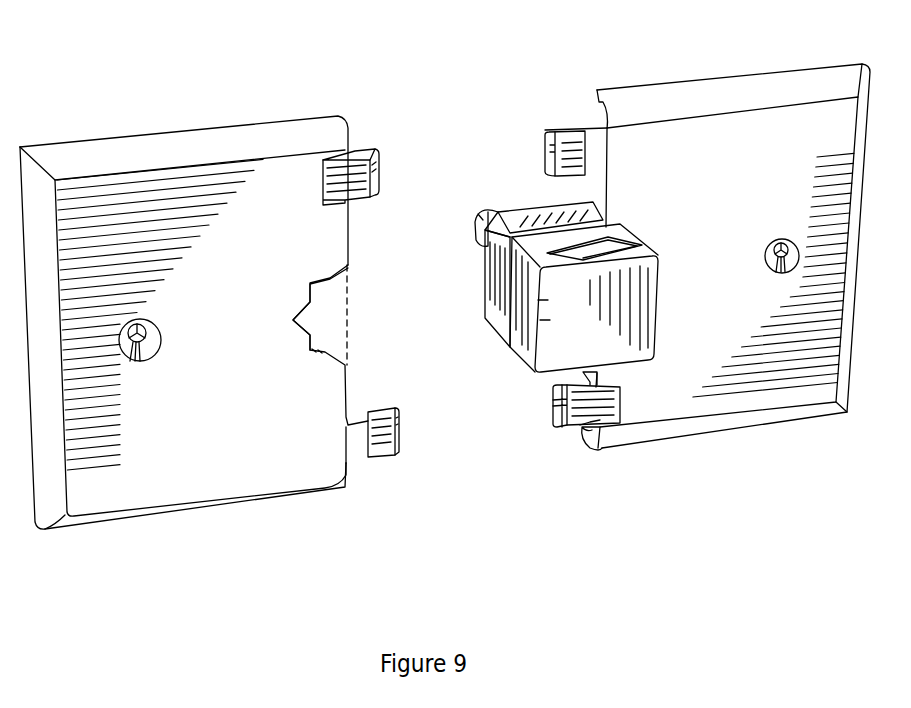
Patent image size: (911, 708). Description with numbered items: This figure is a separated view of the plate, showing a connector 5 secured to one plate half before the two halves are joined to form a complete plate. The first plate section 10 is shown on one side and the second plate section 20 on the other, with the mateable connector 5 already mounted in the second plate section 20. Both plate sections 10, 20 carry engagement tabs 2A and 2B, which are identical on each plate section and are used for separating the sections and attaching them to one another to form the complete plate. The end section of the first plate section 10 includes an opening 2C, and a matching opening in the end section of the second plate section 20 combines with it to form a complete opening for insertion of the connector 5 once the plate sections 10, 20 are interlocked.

The connector 5 is at (520, 225).
The first plate section 10 is at (318, 498).
The second plate section 20 is at (779, 428).
The engagement tab 2A is at (380, 146).
The engagement tab 2B is at (395, 458).
The opening 2C is at (356, 305).